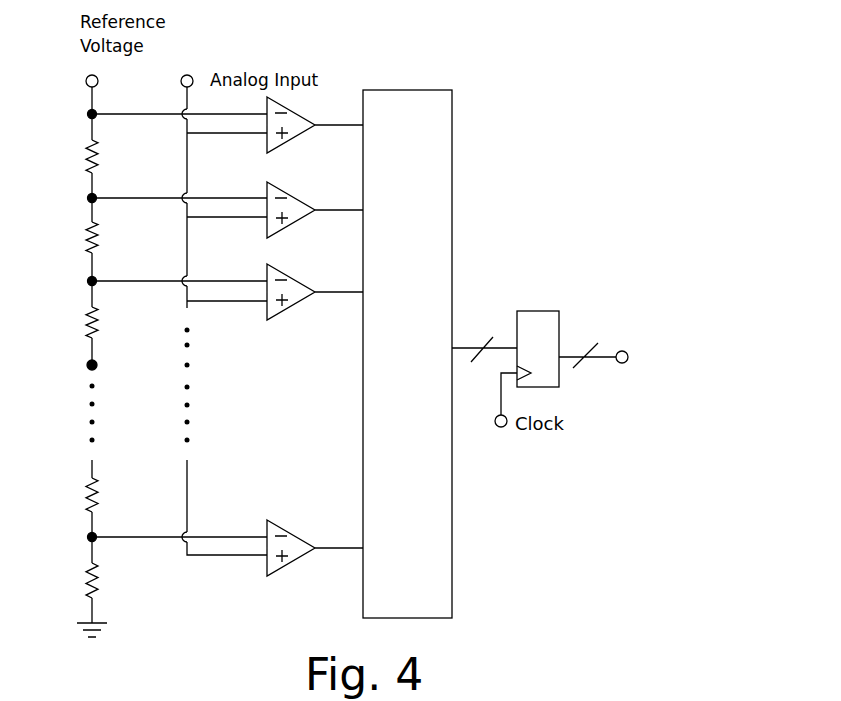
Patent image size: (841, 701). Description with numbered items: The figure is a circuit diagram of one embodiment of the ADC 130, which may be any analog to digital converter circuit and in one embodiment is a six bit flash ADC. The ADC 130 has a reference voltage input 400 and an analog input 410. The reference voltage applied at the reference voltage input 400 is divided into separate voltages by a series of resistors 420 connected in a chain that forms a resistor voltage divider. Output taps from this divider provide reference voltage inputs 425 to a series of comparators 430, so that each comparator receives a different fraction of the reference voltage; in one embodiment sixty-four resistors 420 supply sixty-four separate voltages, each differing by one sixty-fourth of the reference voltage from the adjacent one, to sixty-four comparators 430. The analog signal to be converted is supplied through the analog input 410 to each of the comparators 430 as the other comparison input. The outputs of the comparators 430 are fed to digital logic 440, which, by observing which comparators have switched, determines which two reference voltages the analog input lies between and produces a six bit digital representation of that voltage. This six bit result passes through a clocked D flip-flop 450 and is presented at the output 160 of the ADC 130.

The ADC 130 is at (545, 70).
The output 160 is at (628, 358).
The reference voltage input 400 is at (84, 80).
The analog input 410 is at (188, 74).
The resistors 420 is at (82, 152).
The reference voltage inputs 425 is at (115, 200).
The comparators 430 is at (289, 307).
The digital logic 440 is at (453, 130).
The clocked D flip-flop 450 is at (528, 311).